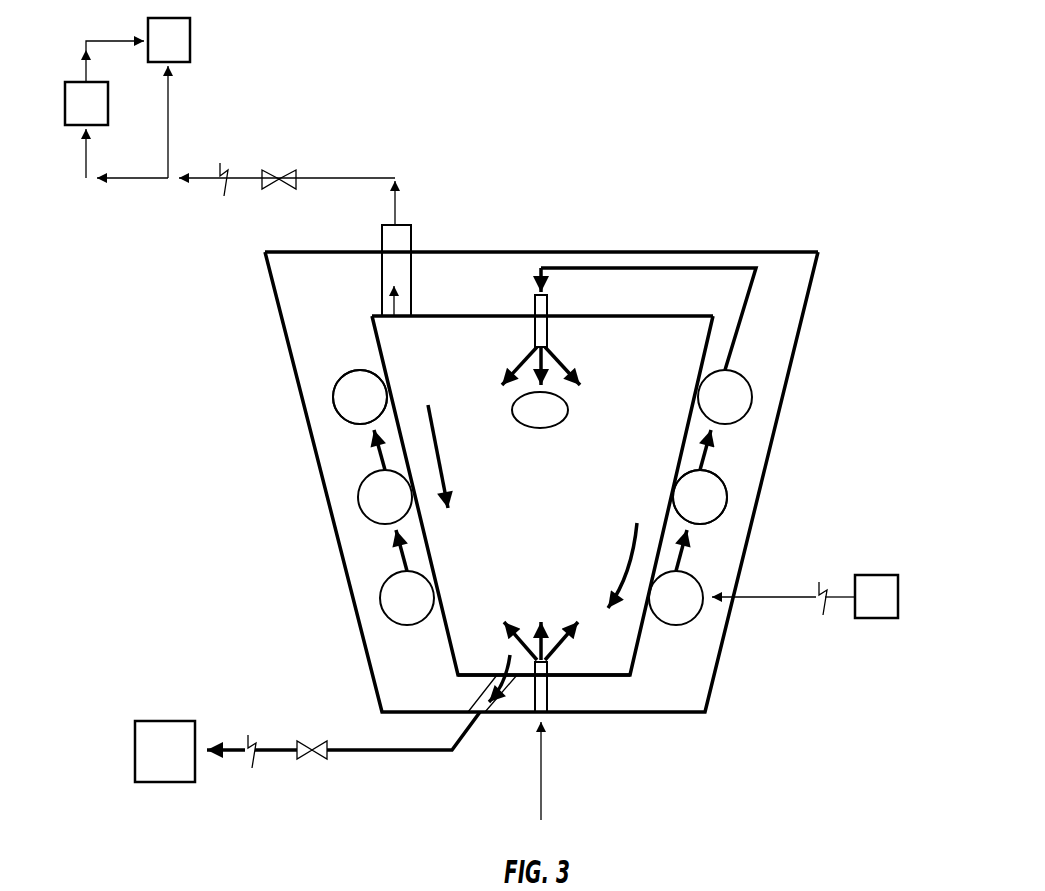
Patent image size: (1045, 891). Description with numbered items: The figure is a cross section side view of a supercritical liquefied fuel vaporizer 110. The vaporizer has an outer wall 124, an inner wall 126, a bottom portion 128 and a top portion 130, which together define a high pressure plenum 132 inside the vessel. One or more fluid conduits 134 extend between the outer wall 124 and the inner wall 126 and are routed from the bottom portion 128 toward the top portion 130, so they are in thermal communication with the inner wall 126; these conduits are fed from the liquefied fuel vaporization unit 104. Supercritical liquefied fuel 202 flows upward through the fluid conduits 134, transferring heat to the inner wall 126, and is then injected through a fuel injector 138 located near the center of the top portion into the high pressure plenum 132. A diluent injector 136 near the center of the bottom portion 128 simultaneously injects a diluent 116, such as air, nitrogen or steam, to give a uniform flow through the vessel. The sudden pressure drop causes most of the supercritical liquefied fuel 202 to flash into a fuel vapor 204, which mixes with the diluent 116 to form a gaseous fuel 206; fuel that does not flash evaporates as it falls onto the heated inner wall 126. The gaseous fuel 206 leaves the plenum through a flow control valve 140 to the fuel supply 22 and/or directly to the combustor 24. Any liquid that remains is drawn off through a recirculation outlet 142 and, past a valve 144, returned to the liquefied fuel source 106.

The supercritical liquefied fuel vaporizer 110 is at (740, 203).
The outer wall 124 is at (294, 371).
The top portion 130 is at (630, 318).
The inner wall 126 is at (425, 530).
The high pressure plenum 132 is at (532, 498).
The bottom portion 128 is at (478, 673).
The fuel injector 138 is at (550, 336).
The fuel vapor 204 is at (520, 363).
The diluent injector 136 is at (548, 665).
The diluent 116 is at (515, 647).
The recirculation outlet 142 is at (507, 694).
The gaseous fuel 206 is at (524, 422).
The flow control valve 140 is at (281, 172).
The combustor 24 is at (157, 53).
The fuel supply 22 is at (75, 117).
The supercritical liquefied fuel 202 is at (344, 409).
The fluid conduits 134 is at (333, 400).
The liquefied fuel vaporization unit 104 is at (861, 610).
The valve 144 is at (310, 759).
The liquefied fuel source 106 is at (165, 716).